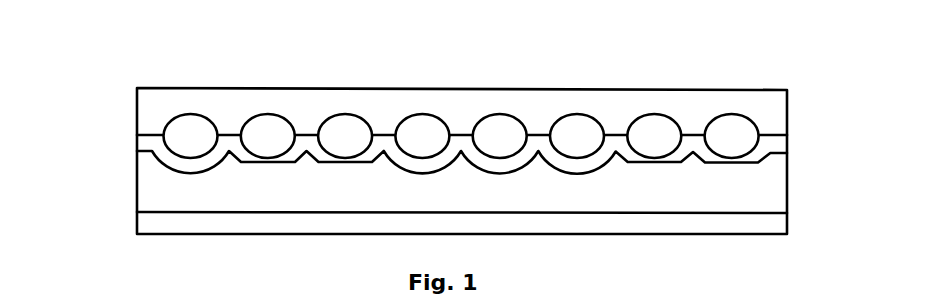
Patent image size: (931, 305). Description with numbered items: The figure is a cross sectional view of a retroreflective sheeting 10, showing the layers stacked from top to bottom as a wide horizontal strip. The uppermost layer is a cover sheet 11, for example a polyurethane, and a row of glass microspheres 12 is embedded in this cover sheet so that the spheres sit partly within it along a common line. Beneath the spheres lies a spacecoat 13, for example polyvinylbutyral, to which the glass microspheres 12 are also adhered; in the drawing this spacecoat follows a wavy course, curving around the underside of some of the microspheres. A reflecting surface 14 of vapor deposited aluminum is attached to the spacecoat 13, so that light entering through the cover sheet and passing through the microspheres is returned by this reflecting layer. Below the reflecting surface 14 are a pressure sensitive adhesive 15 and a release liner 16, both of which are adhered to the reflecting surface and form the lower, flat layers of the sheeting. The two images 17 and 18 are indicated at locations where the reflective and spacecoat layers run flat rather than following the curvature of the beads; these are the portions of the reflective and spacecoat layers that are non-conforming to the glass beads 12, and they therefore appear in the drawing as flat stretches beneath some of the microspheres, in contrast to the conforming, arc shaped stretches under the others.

The retroreflective sheeting 10 is at (478, 127).
The cover sheet 11 is at (758, 110).
The glass microspheres 12 is at (737, 135).
The spacecoat 13 is at (768, 146).
The reflecting surface 14 is at (153, 163).
The pressure sensitive adhesive 15 is at (185, 192).
The release liner 16 is at (168, 225).
The image 17 is at (267, 164).
The image 18 is at (648, 164).